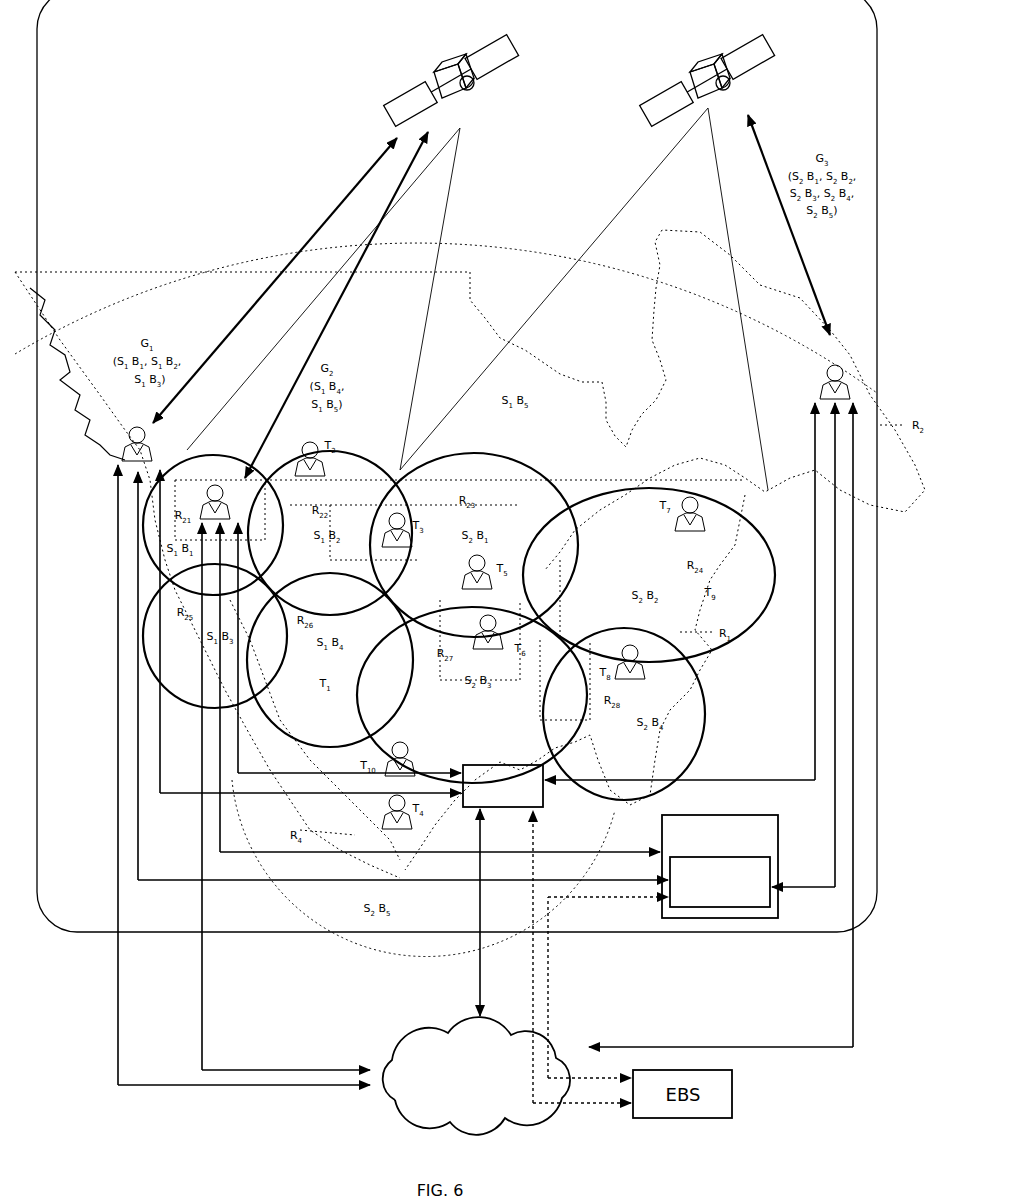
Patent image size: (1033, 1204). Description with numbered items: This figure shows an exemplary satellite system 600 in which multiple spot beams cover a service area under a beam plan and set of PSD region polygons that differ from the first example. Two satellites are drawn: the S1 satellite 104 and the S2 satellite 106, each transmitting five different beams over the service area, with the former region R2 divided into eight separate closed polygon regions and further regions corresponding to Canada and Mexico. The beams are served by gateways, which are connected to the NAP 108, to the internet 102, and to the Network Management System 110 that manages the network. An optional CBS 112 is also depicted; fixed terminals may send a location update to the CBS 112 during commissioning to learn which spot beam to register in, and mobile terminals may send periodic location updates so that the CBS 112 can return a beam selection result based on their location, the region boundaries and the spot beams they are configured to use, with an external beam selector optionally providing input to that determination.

The satellite system 600 is at (842, 154).
The S1 satellite 104 is at (446, 80).
The S2 satellite 106 is at (703, 80).
The network access point (NAP) 108 is at (503, 786).
The Network Management System (NMS) 110 is at (720, 866).
The Central Beam Selector (CBS) 112 is at (720, 882).
The internet 102 is at (476, 1076).